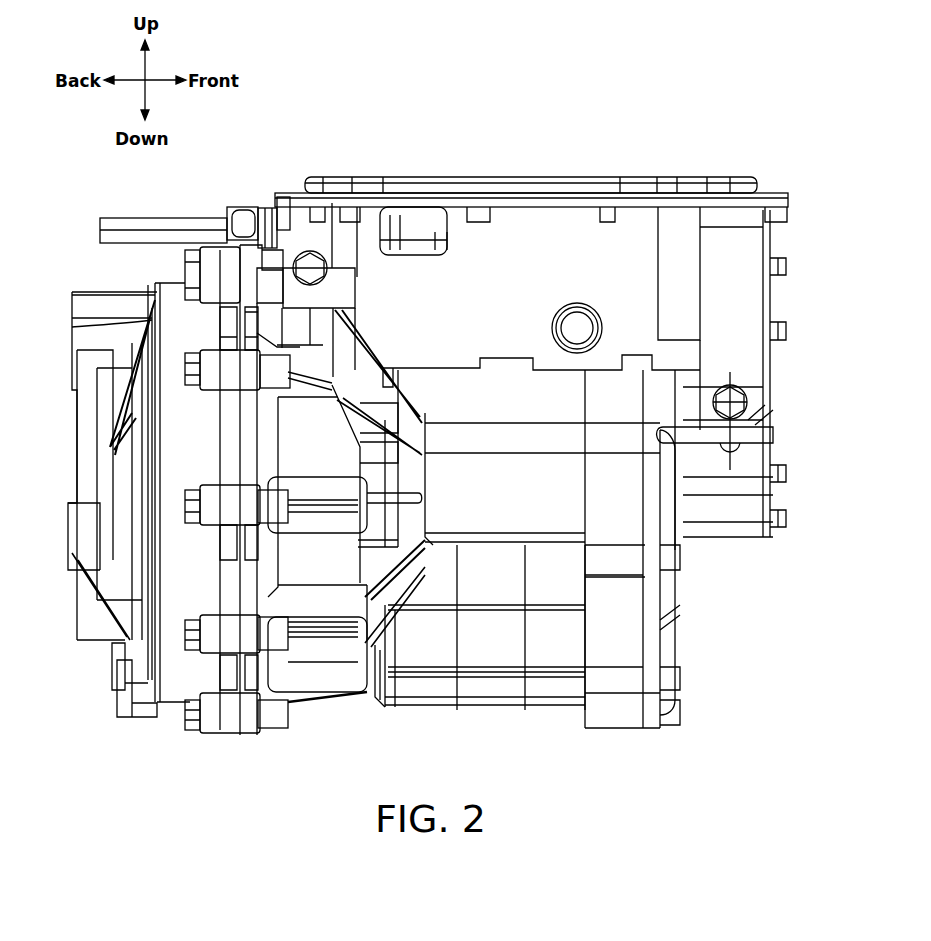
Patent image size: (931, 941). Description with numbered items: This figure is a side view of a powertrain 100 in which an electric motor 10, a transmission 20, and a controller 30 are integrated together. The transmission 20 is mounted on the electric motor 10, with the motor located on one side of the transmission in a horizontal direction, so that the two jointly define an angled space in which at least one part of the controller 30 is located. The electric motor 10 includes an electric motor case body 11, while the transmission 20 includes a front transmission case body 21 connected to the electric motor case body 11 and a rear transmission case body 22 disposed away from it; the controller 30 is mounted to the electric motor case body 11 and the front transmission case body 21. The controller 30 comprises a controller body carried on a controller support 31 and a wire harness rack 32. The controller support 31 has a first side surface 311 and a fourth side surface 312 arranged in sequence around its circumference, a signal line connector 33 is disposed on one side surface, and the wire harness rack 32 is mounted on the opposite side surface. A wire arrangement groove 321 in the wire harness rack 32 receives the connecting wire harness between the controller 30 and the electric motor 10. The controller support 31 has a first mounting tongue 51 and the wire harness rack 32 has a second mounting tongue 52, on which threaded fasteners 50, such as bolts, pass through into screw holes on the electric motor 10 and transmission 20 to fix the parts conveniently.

The powertrain 100 is at (455, 125).
The controller 30 is at (340, 178).
The controller support 31 is at (582, 212).
The first side surface 311 is at (483, 248).
The signal line connector 33 is at (580, 327).
The fourth side surface 312 is at (700, 267).
The wire arrangement groove 321 is at (738, 317).
The wire harness rack 32 is at (773, 383).
The threaded fastener 50 is at (773, 430).
The first mounting tongue 51 is at (287, 253).
The second mounting tongue 52 is at (735, 425).
The electric motor case body 11 is at (633, 655).
The electric motor 10 is at (490, 710).
The front transmission case body 21 is at (300, 678).
The rear transmission case body 22 is at (190, 675).
The transmission 20 is at (75, 442).